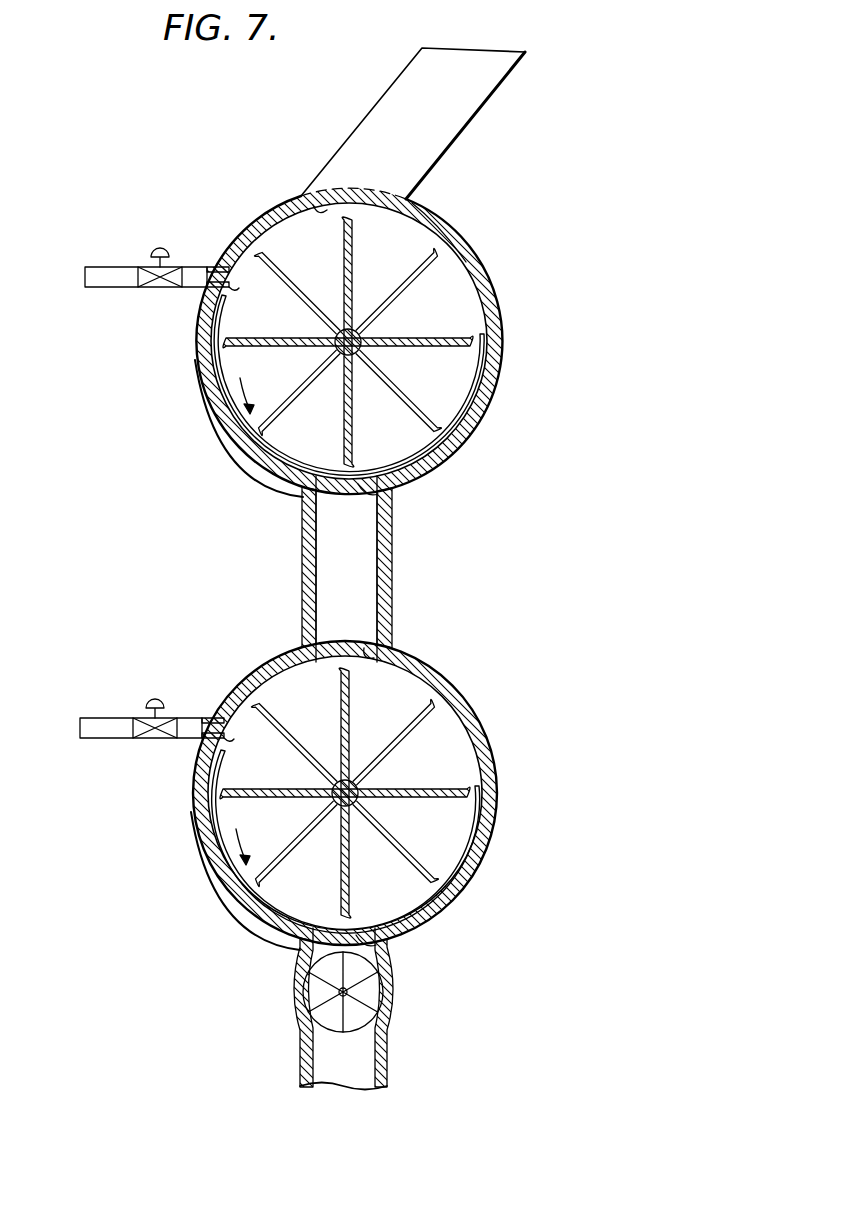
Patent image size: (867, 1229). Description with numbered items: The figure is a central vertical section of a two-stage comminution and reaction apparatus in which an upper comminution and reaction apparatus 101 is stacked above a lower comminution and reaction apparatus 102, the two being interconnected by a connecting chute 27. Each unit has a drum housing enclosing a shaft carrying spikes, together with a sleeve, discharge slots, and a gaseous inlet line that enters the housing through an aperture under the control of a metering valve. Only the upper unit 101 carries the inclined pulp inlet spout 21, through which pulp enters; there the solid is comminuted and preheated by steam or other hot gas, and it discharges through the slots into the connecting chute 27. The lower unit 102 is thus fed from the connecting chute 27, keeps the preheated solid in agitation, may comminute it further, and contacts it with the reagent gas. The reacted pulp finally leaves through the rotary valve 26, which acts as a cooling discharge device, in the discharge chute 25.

The upper comminution and reaction apparatus 101 is at (480, 248).
The lower comminution and reaction apparatus 102 is at (487, 719).
The feed spout 21 is at (400, 88).
The discharge chute 25 is at (393, 1002).
The rotary valve 26 is at (313, 990).
The connecting chute 27 is at (390, 566).